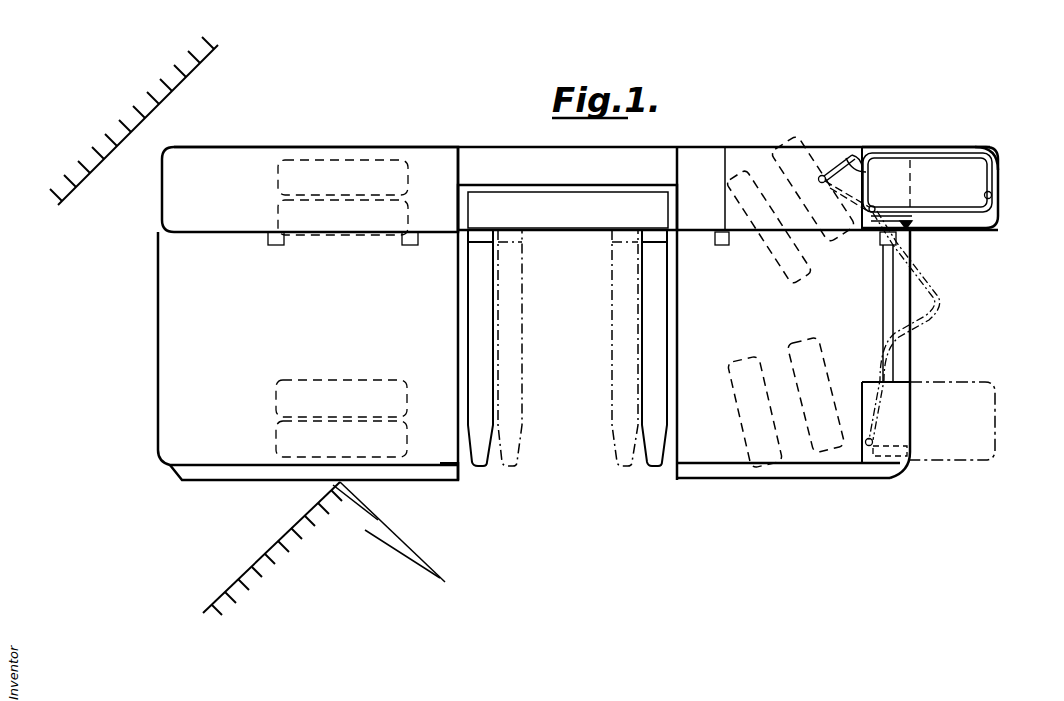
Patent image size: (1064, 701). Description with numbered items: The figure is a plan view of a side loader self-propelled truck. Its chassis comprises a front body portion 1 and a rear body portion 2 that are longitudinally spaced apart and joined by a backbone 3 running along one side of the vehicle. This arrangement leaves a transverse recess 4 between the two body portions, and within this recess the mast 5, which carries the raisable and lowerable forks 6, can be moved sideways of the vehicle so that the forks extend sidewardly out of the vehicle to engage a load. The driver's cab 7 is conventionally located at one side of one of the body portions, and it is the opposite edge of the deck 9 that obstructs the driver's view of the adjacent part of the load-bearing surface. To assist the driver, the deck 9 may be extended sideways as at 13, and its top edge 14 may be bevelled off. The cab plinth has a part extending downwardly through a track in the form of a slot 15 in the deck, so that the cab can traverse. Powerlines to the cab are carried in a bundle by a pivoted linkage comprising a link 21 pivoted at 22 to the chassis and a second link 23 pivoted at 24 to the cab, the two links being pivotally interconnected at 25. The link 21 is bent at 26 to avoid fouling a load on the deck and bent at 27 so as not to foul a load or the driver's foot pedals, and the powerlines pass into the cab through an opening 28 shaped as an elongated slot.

The front body portion 1 is at (308, 313).
The rear body portion 2 is at (837, 306).
The backbone 3 is at (492, 158).
The transverse recess 4 is at (558, 313).
The mast 5 is at (577, 216).
The forks 6 is at (482, 324).
The driver's cab 7 is at (988, 226).
The deck 9 is at (705, 432).
The sideways extension of the deck 13 is at (745, 483).
The top edge of the deck 14 is at (807, 466).
The slot 15 is at (883, 268).
The link 21 is at (860, 160).
The pivot 22 is at (824, 176).
The second link 23 is at (958, 212).
The pivot 24 is at (888, 190).
The pivotal interconnection 25 is at (992, 196).
The bend 26 is at (850, 160).
The bend 27 is at (992, 152).
The opening 28 is at (912, 232).